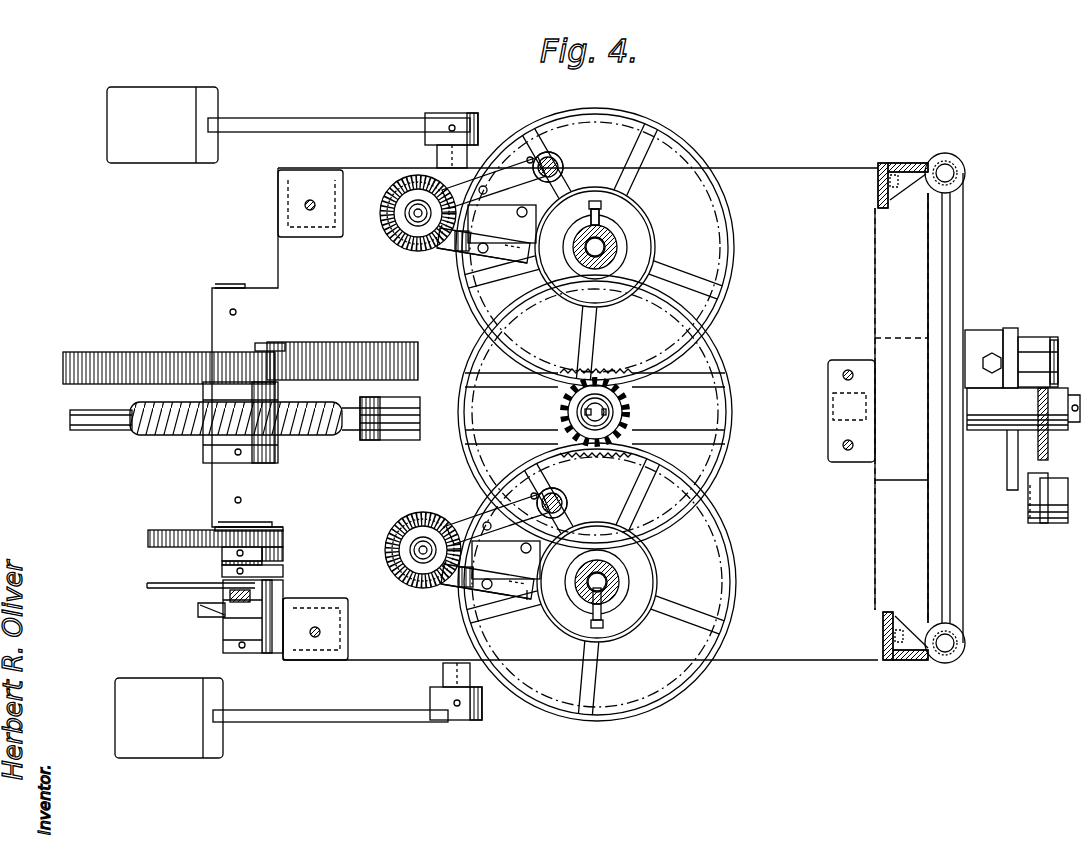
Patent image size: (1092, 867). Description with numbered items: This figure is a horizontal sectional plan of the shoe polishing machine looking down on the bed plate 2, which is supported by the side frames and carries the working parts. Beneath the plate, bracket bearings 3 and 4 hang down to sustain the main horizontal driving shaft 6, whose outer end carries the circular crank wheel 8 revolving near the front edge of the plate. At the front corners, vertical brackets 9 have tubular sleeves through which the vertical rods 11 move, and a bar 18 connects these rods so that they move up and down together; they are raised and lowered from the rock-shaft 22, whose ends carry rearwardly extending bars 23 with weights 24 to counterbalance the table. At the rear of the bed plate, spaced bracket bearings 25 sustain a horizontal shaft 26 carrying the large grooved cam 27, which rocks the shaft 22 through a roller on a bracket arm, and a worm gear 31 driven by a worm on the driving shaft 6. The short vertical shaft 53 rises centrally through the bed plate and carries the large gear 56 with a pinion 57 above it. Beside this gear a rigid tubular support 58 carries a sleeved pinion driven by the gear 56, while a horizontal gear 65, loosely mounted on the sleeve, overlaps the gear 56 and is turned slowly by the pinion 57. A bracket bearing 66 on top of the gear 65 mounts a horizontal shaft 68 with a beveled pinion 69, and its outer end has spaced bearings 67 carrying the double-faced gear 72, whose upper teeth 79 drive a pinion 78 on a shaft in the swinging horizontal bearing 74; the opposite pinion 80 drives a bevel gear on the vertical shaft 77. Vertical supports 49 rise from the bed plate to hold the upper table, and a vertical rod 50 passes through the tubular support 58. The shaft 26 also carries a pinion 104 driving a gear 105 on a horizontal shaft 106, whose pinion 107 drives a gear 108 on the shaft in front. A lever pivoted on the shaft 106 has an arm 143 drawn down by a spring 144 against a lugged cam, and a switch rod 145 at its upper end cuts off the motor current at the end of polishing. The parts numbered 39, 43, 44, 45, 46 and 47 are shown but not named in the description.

The bed plate 2 is at (578, 414).
The bracket bearing 3 is at (901, 408).
The bracket bearing 4 is at (345, 400).
The main driving shaft 6 is at (412, 406).
The crank wheel 8 is at (1008, 330).
The vertical bracket 9 is at (878, 187).
The rod 11 is at (930, 166).
The bar 18 is at (928, 294).
The rock-shaft 22 is at (439, 113).
The bar 23 is at (318, 117).
The weight 24 is at (165, 422).
The bracket bearing 25 is at (280, 414).
The shaft 26 is at (228, 284).
The cam 27 is at (97, 352).
The worm gear 31 is at (165, 440).
The shaft 39 is at (1036, 440).
The block 43 is at (1023, 409).
The nut 44 is at (984, 359).
The clamp 45 is at (1044, 500).
The collar 46 is at (1052, 338).
The screw 47 is at (1030, 492).
The support 49 is at (835, 362).
The vertical rod 50 is at (620, 240).
The short vertical shaft 53 is at (608, 408).
The large gear 56 is at (718, 414).
The pinion 57 is at (566, 410).
The tubular support 58 is at (594, 272).
The horizontal gear 65 is at (708, 258).
The bracket bearing 66 is at (500, 264).
The bearing 67 is at (412, 228).
The horizontal shaft 68 is at (583, 212).
The beveled pinion 69 is at (527, 600).
The double-faced gear 72 is at (392, 240).
The horizontal bearing 74 is at (446, 186).
The vertical shaft 77 is at (562, 167).
The pinion 78 is at (438, 244).
The upper teeth 79 is at (381, 228).
The pinion 80 is at (530, 158).
The pinion 104 is at (262, 543).
The gear 105 is at (148, 540).
The horizontal shaft 106 is at (284, 575).
The pinion 107 is at (224, 563).
The gear 108 is at (284, 554).
The arm 143 is at (198, 609).
The spring 144 is at (220, 620).
The switch rod 145 is at (148, 588).